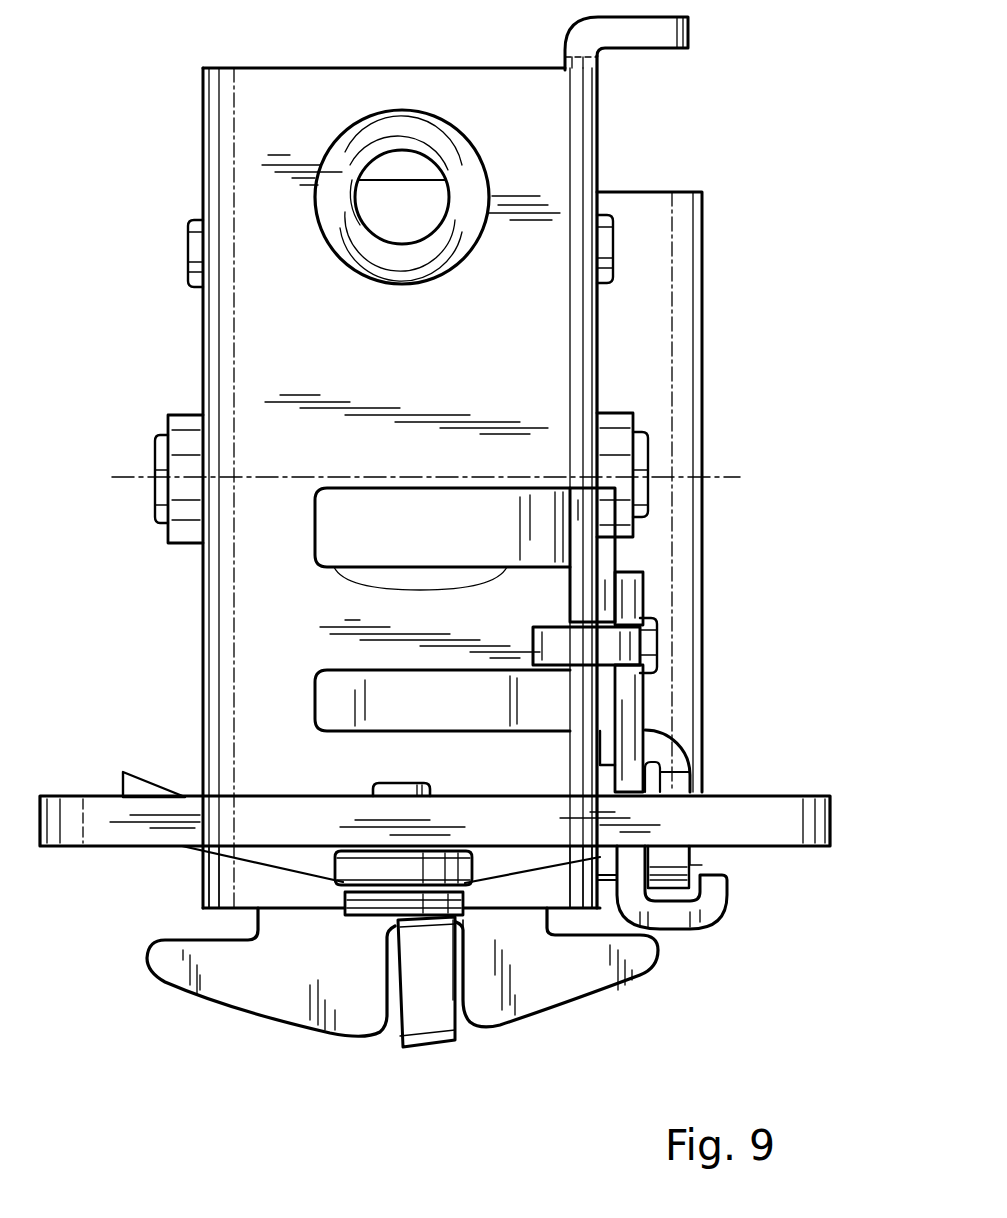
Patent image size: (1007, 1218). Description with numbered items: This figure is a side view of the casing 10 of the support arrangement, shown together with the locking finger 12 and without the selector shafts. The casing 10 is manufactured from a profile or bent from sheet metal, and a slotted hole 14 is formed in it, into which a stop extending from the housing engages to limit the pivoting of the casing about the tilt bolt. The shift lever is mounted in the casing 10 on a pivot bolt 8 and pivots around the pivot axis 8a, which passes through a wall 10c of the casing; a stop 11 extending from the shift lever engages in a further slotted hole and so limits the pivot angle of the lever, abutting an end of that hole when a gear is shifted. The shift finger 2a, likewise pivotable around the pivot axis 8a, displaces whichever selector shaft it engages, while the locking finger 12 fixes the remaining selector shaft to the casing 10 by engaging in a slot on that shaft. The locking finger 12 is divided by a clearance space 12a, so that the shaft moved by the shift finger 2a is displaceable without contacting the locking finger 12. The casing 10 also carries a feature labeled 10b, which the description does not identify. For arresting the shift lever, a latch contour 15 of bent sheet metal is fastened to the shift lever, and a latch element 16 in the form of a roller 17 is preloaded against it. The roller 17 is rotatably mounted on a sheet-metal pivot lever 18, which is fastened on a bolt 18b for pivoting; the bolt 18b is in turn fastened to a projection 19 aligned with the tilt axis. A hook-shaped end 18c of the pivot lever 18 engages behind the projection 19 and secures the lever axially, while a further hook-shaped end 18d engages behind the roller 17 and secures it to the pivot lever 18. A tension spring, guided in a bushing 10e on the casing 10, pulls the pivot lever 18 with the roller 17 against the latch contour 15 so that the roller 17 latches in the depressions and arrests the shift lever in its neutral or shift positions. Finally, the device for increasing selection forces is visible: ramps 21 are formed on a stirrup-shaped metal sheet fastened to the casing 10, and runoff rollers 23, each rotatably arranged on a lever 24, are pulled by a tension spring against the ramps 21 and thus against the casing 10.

The casing 10 is at (580, 132).
The hole in housing 10b is at (396, 123).
The wall of the casing 10c is at (601, 166).
The bushing 10e is at (680, 237).
The stop 11 is at (195, 246).
The pivot bolt 8 is at (166, 463).
The pivot axis 8a is at (720, 475).
The slotted hole 14 is at (350, 578).
The projection 19 is at (595, 556).
The pivot lever 18 is at (635, 692).
The bolt 18b is at (651, 642).
The hook-shaped end 18c is at (590, 635).
The further hook-shaped end 18d is at (715, 888).
The latch contour 15 is at (682, 782).
The latch element 16 is at (744, 868).
The roller 17 is at (670, 860).
The ramp 21 is at (138, 786).
The lever 24 is at (115, 830).
The runoff roller 23 is at (355, 870).
The locking finger 12 is at (262, 1000).
The clearance space 12a is at (460, 1000).
The shift finger 2a is at (430, 1020).